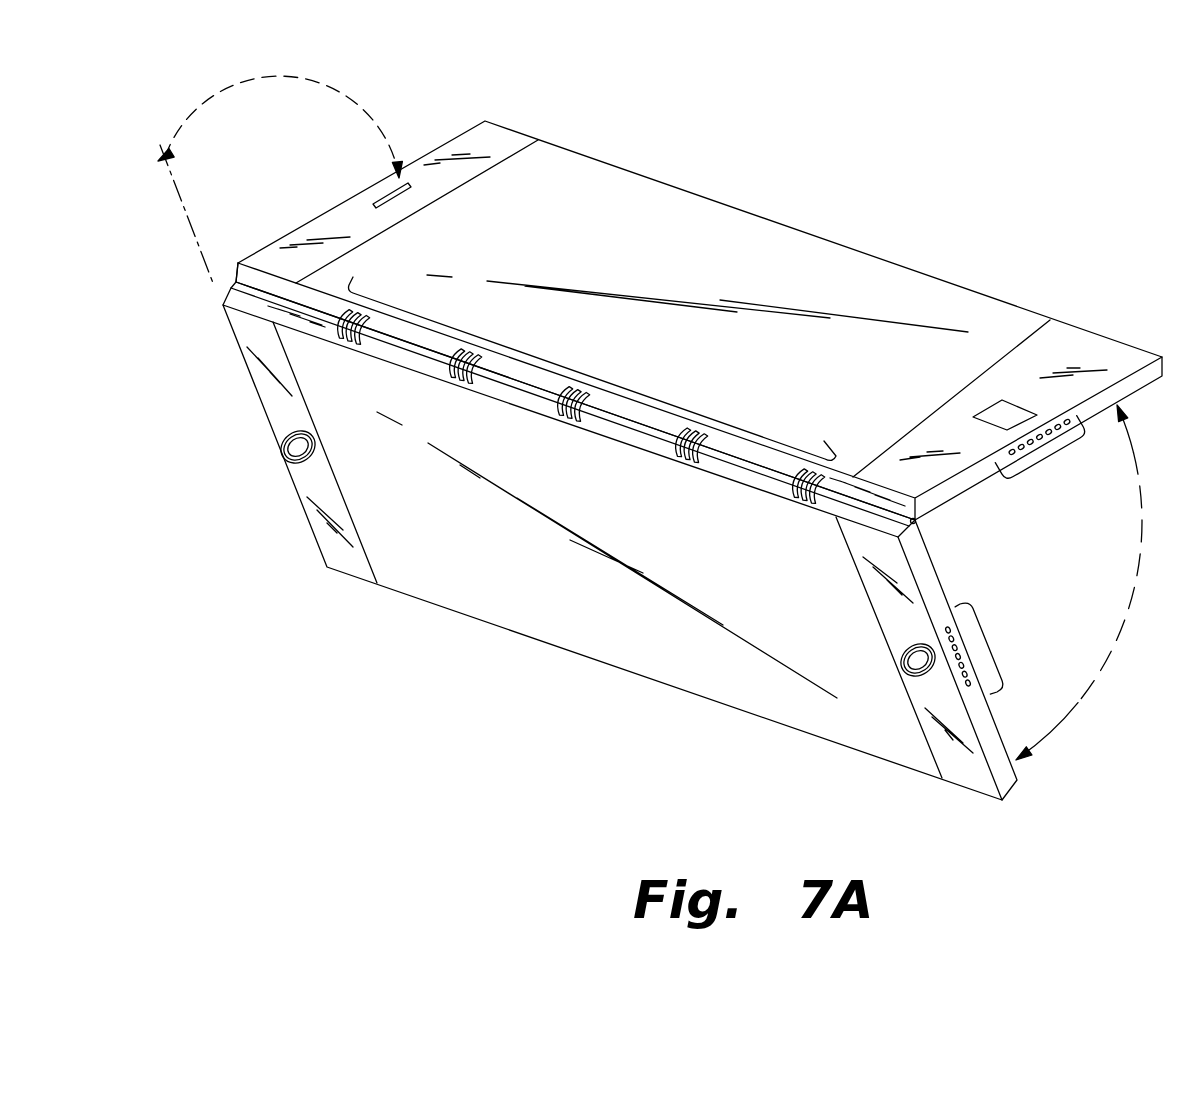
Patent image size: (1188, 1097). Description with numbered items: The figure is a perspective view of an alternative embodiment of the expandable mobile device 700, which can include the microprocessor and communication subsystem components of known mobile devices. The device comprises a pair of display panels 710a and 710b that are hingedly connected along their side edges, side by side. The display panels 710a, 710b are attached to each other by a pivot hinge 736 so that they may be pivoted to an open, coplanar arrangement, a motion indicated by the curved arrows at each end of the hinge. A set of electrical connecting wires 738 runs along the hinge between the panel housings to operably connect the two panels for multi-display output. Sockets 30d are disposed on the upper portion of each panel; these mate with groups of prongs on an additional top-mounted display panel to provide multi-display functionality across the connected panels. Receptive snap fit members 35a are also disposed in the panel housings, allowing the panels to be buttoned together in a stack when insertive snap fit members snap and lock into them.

The expandable mobile device 700 is at (823, 237).
The display panel 710a is at (833, 383).
The display panel 710b is at (510, 563).
The pivot hinge 736 is at (920, 518).
The electrical connecting wires 738 is at (606, 364).
The sockets 30d is at (1050, 460).
The receptive snap fit members 35a is at (302, 462).